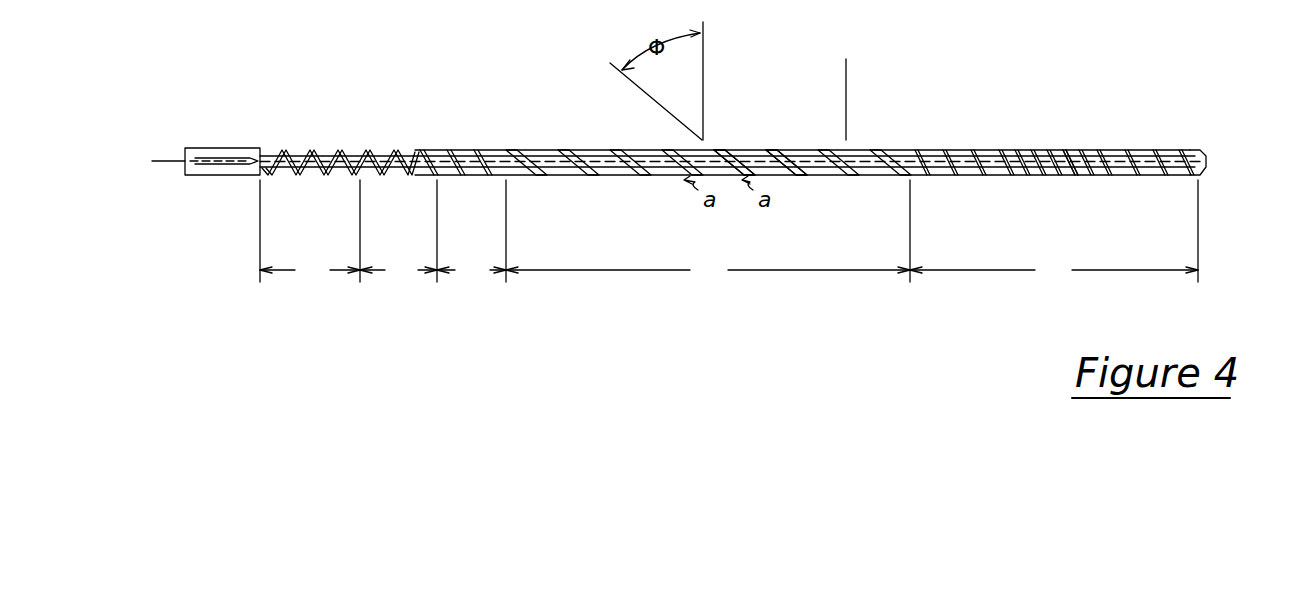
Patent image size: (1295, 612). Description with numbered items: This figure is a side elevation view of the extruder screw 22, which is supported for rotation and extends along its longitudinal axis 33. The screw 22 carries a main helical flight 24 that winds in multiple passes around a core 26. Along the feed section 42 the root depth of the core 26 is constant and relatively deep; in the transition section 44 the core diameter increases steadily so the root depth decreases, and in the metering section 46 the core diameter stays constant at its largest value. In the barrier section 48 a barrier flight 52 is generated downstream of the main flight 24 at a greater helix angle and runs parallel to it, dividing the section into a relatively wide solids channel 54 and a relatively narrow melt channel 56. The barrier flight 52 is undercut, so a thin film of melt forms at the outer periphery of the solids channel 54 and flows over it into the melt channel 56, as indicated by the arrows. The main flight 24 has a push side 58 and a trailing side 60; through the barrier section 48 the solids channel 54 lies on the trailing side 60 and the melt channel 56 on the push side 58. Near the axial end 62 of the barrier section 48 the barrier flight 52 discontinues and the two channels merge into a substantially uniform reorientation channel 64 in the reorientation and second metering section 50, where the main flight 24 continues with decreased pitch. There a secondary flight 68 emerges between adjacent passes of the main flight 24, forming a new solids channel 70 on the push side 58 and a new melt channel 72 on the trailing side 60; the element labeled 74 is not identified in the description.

The screw 22 is at (583, 58).
The main helical flight 24 is at (600, 150).
The core 26 is at (362, 173).
The longitudinal axis 33 is at (1208, 160).
The feed section 42 is at (310, 233).
The transition section 44 is at (398, 233).
The metering section 46 is at (471, 233).
The barrier section 48 is at (708, 233).
The reorientation and second metering section 50 is at (1054, 233).
The barrier flight 52 is at (740, 145).
The solids channel 54 is at (608, 176).
The melt channel 56 is at (640, 176).
The push side 58 is at (790, 145).
The trailing side 60 is at (746, 145).
The axial end 62 is at (846, 66).
The reorientation channel 64 is at (950, 145).
The secondary flight 68 is at (1020, 148).
The new solids channel 70 is at (1053, 150).
The new melt channel 72 is at (1042, 148).
The wire 74 is at (1062, 176).